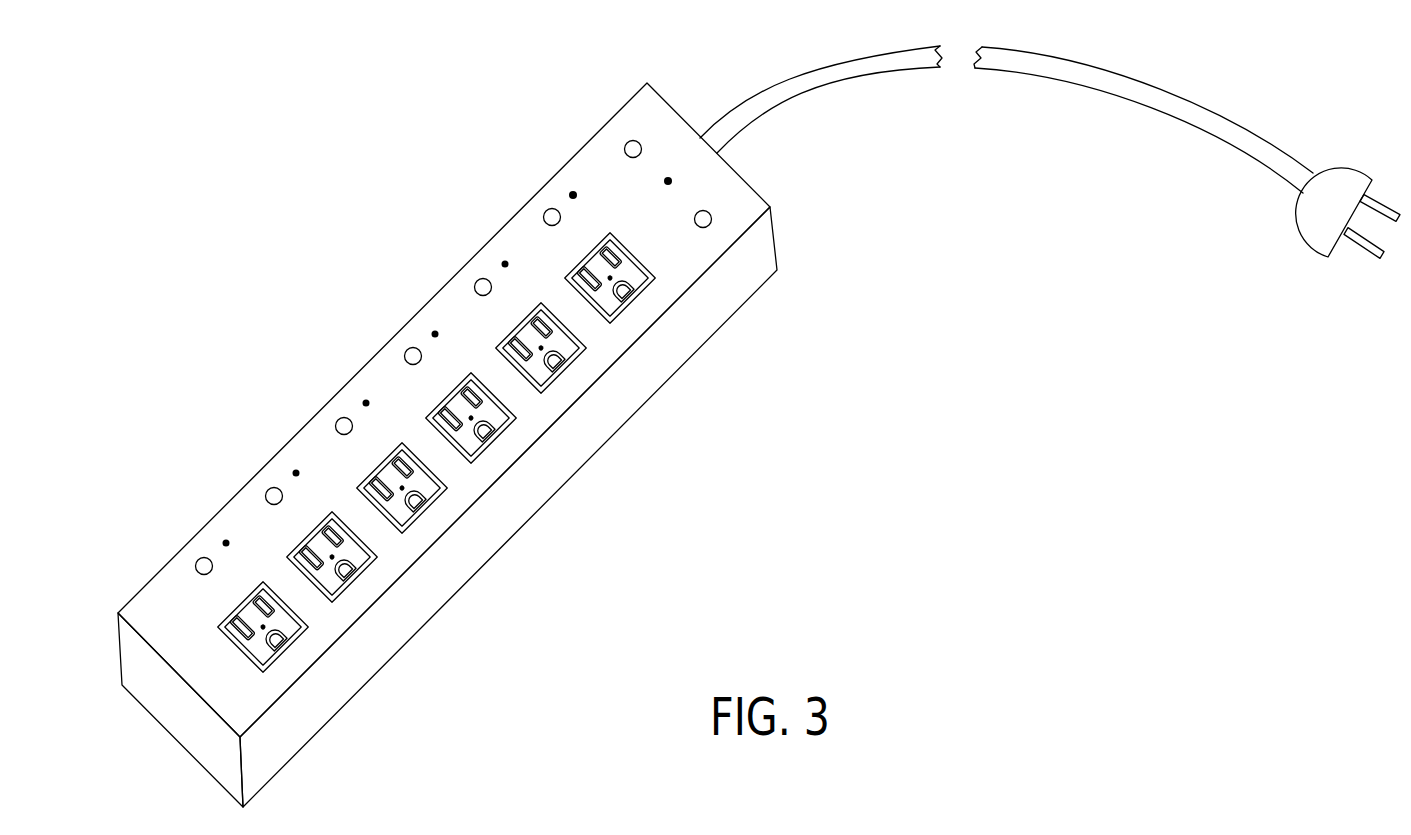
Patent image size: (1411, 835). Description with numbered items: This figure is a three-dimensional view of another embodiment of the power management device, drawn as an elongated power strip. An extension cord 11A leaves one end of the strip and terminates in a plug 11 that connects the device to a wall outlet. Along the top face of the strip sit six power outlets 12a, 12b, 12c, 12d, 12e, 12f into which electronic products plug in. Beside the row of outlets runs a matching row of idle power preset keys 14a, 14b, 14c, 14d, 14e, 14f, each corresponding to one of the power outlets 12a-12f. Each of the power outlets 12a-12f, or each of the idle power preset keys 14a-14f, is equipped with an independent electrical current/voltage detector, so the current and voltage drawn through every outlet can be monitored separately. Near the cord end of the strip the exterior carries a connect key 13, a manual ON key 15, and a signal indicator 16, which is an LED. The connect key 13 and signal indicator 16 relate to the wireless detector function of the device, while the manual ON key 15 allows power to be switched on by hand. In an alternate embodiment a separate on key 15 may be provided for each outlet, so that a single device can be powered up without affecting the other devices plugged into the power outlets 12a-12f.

The plug 11 is at (1323, 213).
The extension cord 11A is at (1147, 95).
The power outlet 12a is at (633, 295).
The power outlet 12b is at (563, 364).
The power outlet 12c is at (493, 434).
The power outlet 12d is at (424, 504).
The power outlet 12e is at (354, 573).
The power outlet 12f is at (285, 643).
The connect key 13 is at (712, 219).
The idle power preset key 14a is at (543, 218).
The idle power preset key 14b is at (474, 288).
The idle power preset key 14c is at (404, 357).
The idle power preset key 14d is at (335, 427).
The idle power preset key 14e is at (265, 498).
The idle power preset key 14f is at (196, 567).
The manual ON key 15 is at (629, 141).
The signal indicator 16 is at (668, 181).